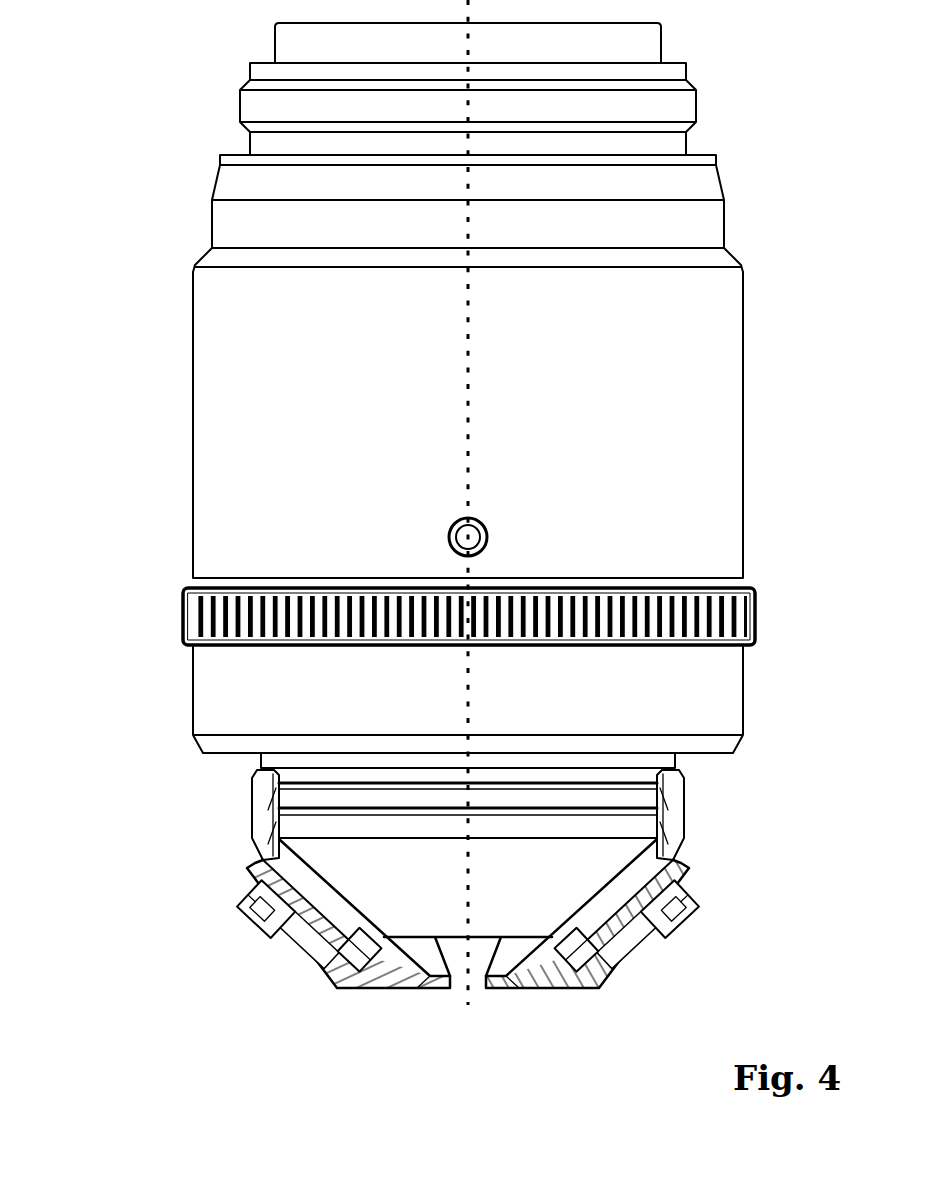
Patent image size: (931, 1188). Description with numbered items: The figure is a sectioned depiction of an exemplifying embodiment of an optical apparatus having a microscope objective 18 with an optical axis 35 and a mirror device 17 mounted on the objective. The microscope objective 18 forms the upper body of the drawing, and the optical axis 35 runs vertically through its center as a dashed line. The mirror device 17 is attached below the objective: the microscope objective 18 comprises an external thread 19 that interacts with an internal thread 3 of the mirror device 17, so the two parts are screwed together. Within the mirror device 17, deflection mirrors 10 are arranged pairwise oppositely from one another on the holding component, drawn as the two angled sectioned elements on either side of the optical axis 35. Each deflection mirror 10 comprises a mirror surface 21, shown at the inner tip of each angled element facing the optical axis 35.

The microscope objective 18 is at (128, 338).
The optical axis 35 is at (470, 452).
The mirror device 17 is at (400, 880).
The external thread 19 is at (312, 800).
The internal thread 3 is at (278, 797).
The deflection mirror 10 is at (378, 963).
The mirror surface 21 is at (442, 982).